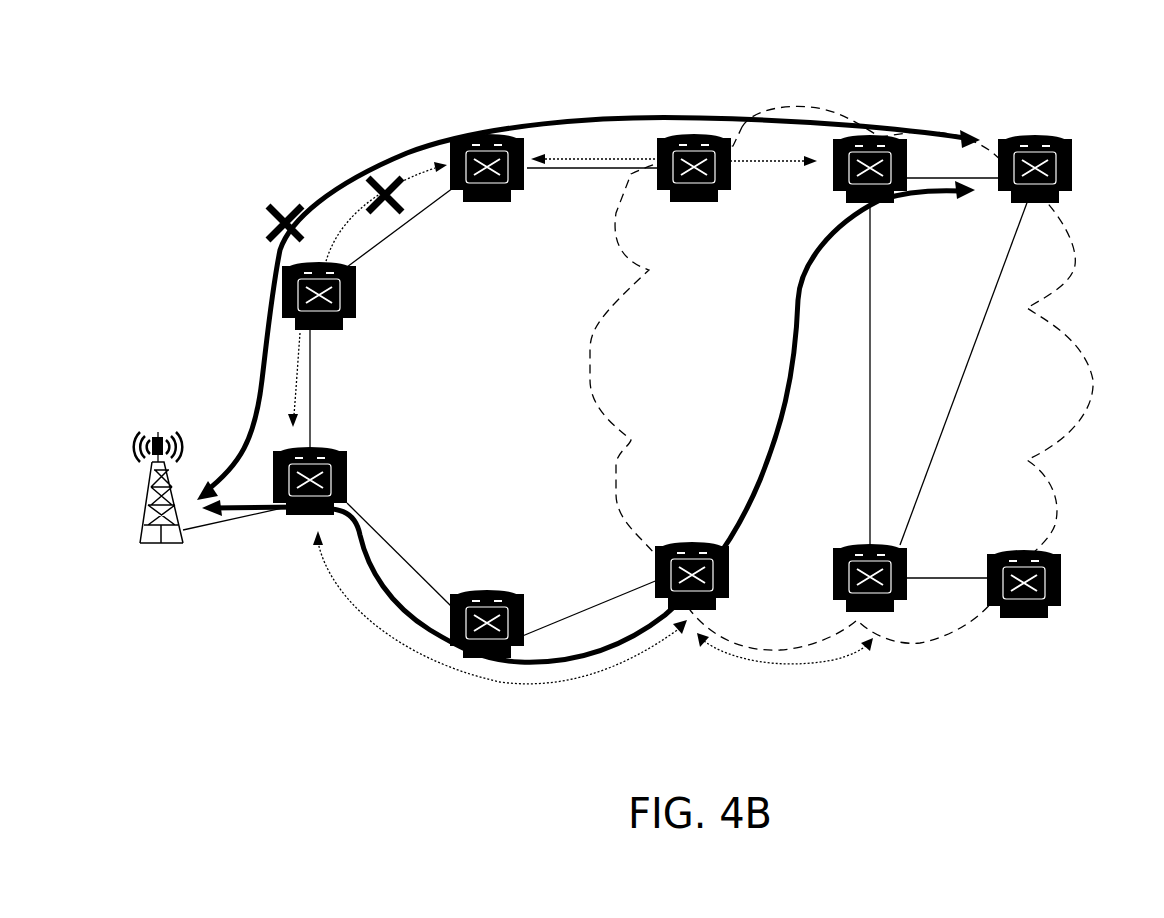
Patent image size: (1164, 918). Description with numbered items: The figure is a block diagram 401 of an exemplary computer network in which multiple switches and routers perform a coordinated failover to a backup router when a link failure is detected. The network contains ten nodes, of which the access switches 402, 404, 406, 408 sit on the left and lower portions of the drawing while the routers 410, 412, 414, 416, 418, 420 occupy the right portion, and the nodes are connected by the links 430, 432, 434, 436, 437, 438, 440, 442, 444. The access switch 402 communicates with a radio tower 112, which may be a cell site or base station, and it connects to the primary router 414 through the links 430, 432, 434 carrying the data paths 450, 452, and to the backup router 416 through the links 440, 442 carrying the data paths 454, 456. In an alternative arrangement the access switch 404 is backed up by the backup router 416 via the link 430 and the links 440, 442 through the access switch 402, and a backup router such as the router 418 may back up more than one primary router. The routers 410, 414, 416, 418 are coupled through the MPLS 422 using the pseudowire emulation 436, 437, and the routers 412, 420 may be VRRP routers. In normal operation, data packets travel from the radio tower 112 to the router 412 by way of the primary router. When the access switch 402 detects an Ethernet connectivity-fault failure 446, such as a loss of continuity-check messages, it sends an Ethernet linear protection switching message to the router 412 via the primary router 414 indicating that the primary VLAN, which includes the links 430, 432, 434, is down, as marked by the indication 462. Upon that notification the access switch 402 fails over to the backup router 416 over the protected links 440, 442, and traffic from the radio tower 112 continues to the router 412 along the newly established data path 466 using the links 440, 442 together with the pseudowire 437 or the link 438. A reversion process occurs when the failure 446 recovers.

The block diagram 401 is at (215, 70).
The radio tower 112 is at (158, 434).
The access switch 402 is at (352, 472).
The access switch 404 is at (350, 300).
The access switch 406 is at (515, 192).
The access switch 408 is at (510, 592).
The router 410 is at (907, 190).
The router 412 is at (1033, 137).
The primary router 414 is at (730, 182).
The backup router 416 is at (733, 581).
The router 418 is at (860, 548).
The router 420 is at (1012, 554).
The MPLS 422 is at (592, 368).
The link 430 is at (312, 406).
The link 432 is at (400, 226).
The link 434 is at (565, 174).
The PWE 436 is at (934, 177).
The PWE 437 is at (962, 363).
The link 438 is at (868, 360).
The link 440 is at (387, 538).
The link 442 is at (623, 591).
The link 444 is at (917, 582).
The 802.1ag failure 446 is at (375, 178).
The data path 450 is at (346, 238).
The data path 452 is at (623, 158).
The data path 454 is at (520, 680).
The data path 456 is at (777, 668).
The primary VLAN down indication 462 is at (278, 206).
The newly established data path 466 is at (783, 414).